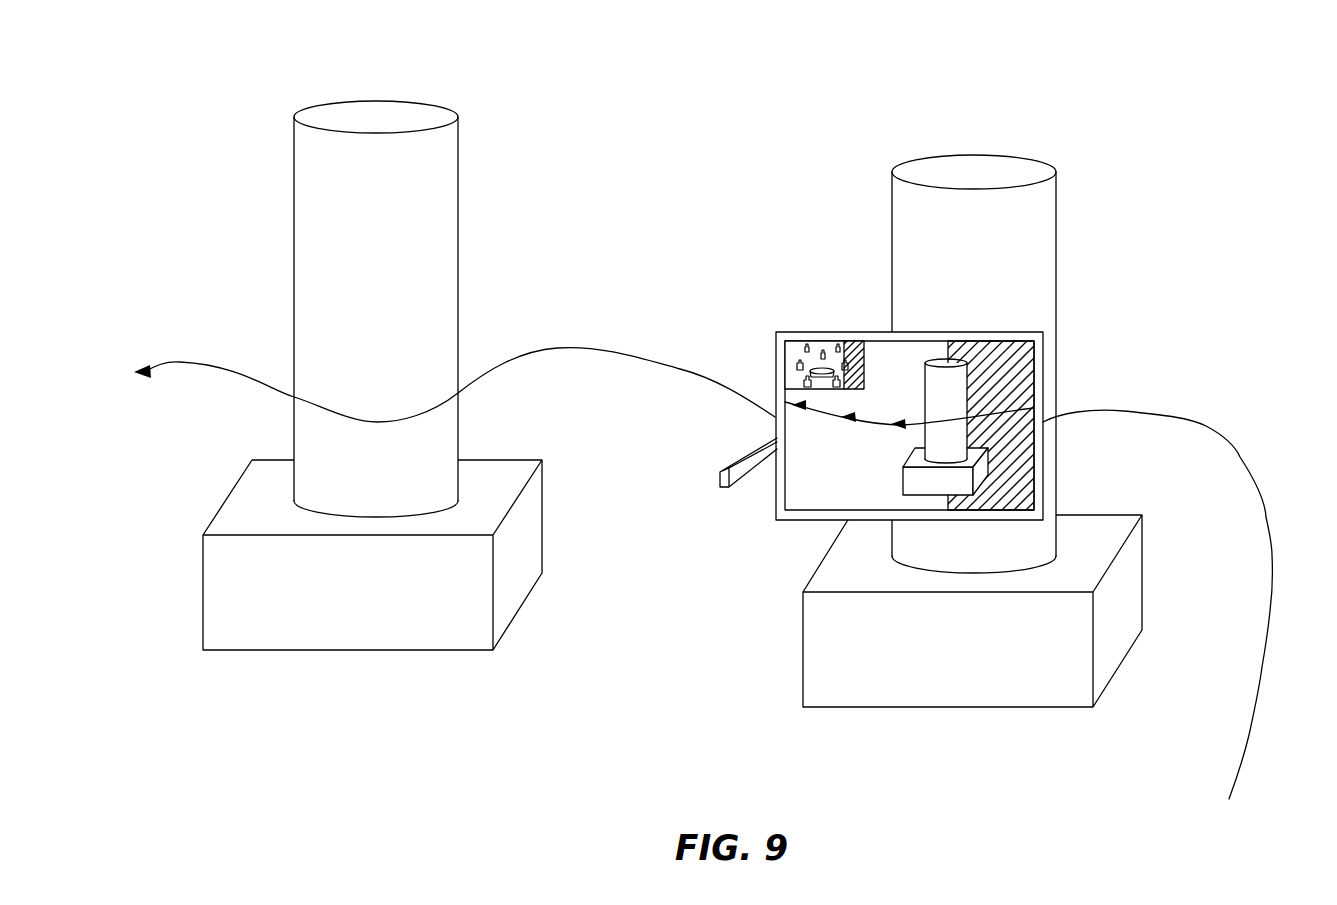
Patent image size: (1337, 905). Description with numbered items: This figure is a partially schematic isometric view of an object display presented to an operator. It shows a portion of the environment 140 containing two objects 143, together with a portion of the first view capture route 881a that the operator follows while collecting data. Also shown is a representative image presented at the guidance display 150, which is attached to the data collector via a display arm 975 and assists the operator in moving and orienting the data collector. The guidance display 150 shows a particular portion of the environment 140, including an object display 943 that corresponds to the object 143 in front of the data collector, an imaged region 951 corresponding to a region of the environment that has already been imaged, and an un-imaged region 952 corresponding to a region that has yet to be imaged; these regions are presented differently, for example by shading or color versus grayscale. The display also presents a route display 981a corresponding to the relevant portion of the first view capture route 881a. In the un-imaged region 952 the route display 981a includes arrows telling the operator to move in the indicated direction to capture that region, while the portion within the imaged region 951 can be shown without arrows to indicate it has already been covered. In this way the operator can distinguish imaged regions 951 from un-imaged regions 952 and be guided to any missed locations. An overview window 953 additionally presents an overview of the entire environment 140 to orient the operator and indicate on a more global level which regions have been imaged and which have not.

The object 143 is at (503, 106).
The environment 140 is at (758, 141).
The guidance display 150 is at (795, 328).
The un-imaged region 952 is at (830, 473).
The imaged region 951 is at (1017, 355).
The object display 943 is at (968, 366).
The overview window 953 is at (785, 344).
The route display 981a is at (993, 415).
The first view capture route 881a is at (1223, 439).
The display arm 975 is at (740, 457).